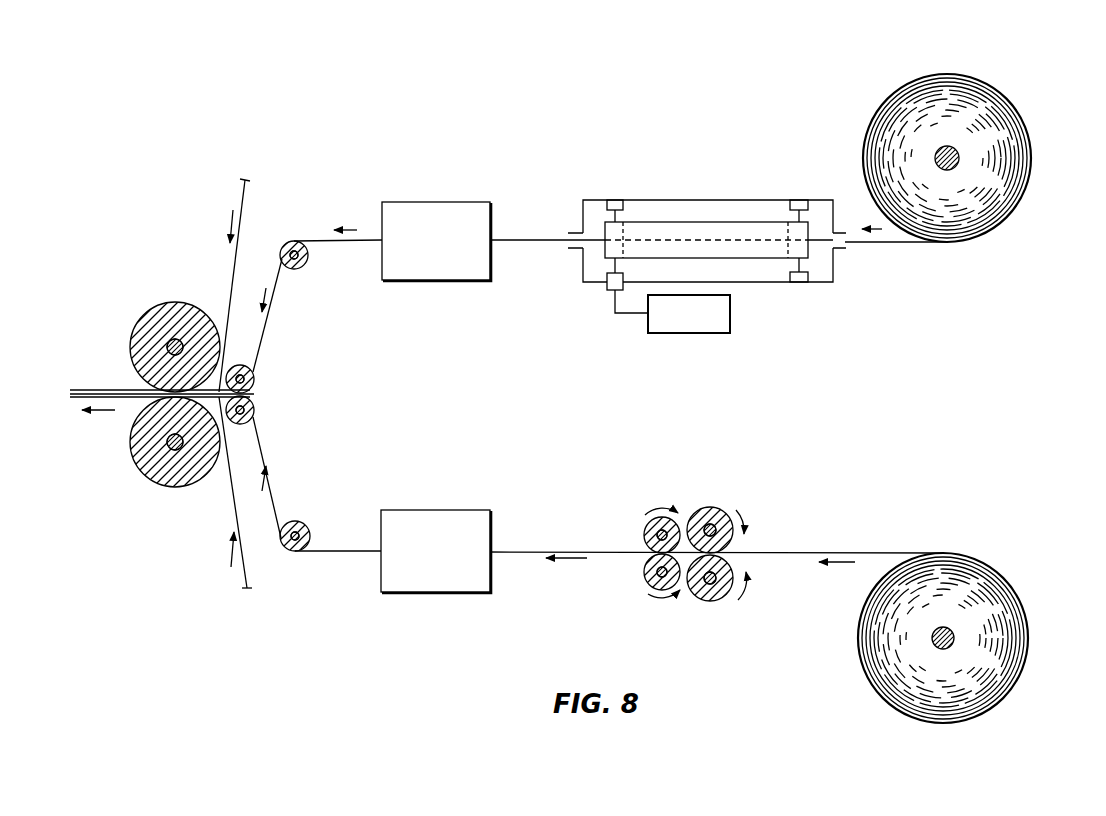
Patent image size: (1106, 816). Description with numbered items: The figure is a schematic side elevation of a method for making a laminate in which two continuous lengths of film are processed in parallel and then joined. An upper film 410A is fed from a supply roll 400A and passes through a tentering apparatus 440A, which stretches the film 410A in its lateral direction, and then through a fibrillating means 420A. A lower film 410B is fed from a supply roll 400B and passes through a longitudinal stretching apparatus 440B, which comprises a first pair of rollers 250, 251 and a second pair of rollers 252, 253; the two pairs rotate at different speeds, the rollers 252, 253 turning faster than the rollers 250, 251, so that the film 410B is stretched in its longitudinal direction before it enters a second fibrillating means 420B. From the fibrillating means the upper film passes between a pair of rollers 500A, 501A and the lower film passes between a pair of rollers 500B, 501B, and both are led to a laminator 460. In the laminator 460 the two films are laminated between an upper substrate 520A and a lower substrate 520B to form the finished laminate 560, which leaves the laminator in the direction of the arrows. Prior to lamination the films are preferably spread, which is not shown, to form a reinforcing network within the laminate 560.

The supply roll 400A is at (993, 110).
The film 410A is at (888, 244).
The tentering apparatus 440A is at (694, 198).
The fibrillating means 420A is at (443, 202).
The roller 500A is at (297, 243).
The substrate 520A is at (242, 181).
The roller 501A is at (253, 384).
The roller 501B is at (254, 410).
The laminator 460 is at (210, 296).
The laminate 560 is at (112, 381).
The substrate 520B is at (231, 492).
The roller 500B is at (304, 522).
The fibrillating means 420B is at (448, 510).
The film 410B is at (846, 538).
The longitudinal stretching apparatus 440B is at (688, 565).
The roller 250 is at (712, 509).
The roller 251 is at (717, 598).
The roller 252 is at (647, 518).
The roller 253 is at (651, 586).
The supply roll 400B is at (958, 588).